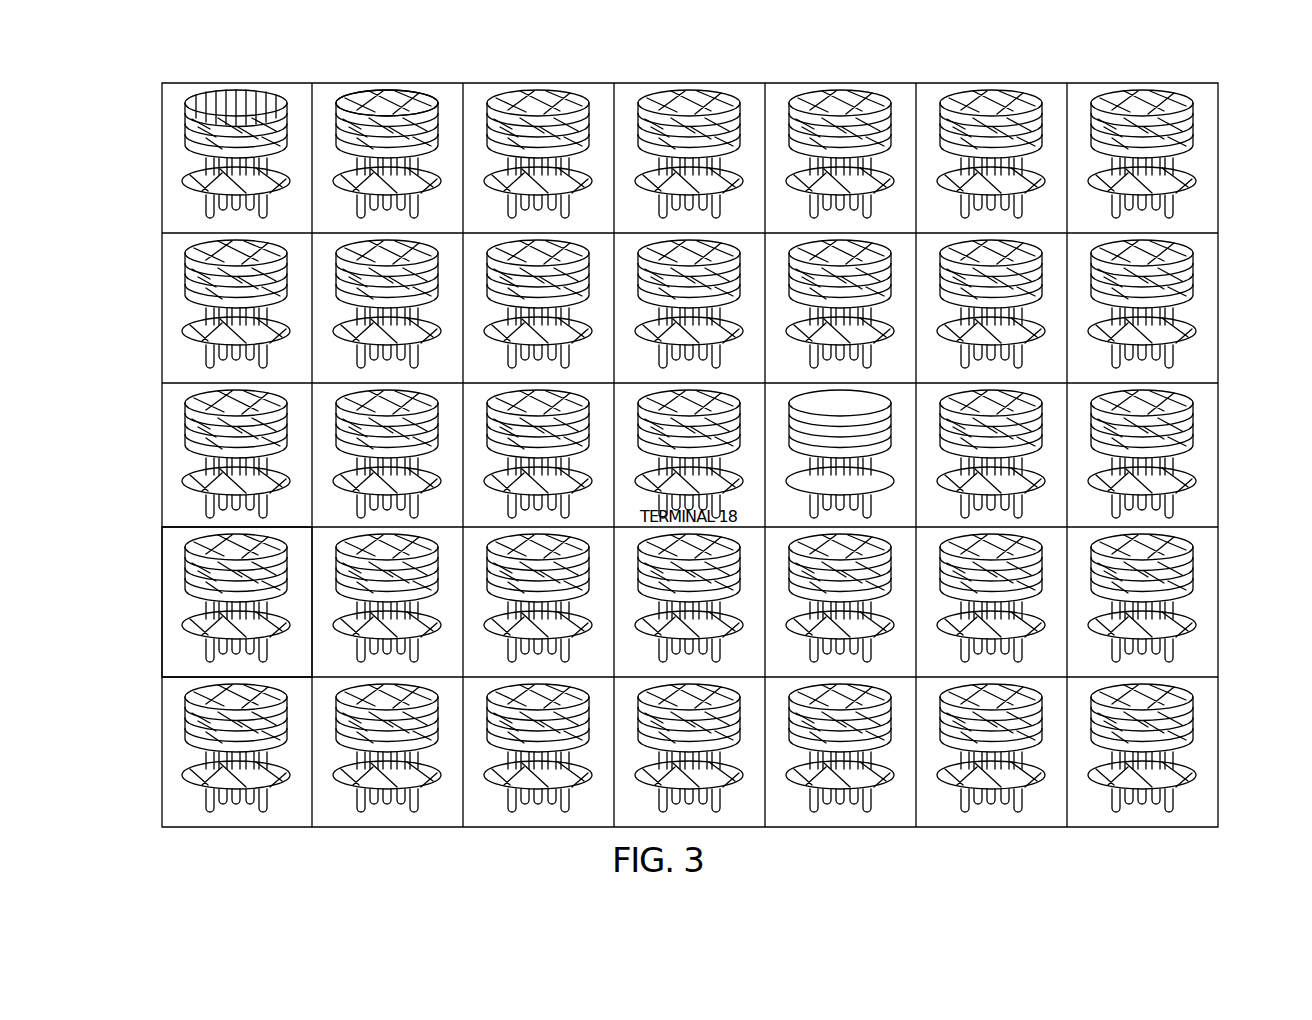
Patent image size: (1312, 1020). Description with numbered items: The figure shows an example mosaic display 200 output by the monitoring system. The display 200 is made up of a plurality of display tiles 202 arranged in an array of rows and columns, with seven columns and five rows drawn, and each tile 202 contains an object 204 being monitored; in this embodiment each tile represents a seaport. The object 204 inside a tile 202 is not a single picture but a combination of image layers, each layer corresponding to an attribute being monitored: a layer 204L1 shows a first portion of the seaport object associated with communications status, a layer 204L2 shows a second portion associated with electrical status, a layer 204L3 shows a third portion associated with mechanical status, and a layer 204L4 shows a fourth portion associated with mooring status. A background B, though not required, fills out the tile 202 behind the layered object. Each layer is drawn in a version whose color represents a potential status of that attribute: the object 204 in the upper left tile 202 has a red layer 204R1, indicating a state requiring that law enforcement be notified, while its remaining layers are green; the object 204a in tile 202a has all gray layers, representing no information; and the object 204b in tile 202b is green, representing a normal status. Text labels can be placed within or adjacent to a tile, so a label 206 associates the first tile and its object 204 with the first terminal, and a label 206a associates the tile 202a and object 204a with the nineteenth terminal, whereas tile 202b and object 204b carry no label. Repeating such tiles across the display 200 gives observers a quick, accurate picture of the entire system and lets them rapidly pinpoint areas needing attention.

The mosaic display 200 is at (1218, 510).
The display tile 202 is at (279, 108).
The display tile 202a is at (897, 406).
The display tile 202b is at (426, 135).
The object 204 is at (190, 142).
The object 204a is at (848, 400).
The object 204b is at (380, 103).
The red layer 204R1 is at (190, 104).
The layer 204L1 is at (190, 546).
The layer 204L2 is at (190, 573).
The layer 204L3 is at (192, 598).
The layer 204L4 is at (195, 626).
The text label 206 is at (190, 216).
The text label 206a is at (800, 497).
The background B is at (175, 657).